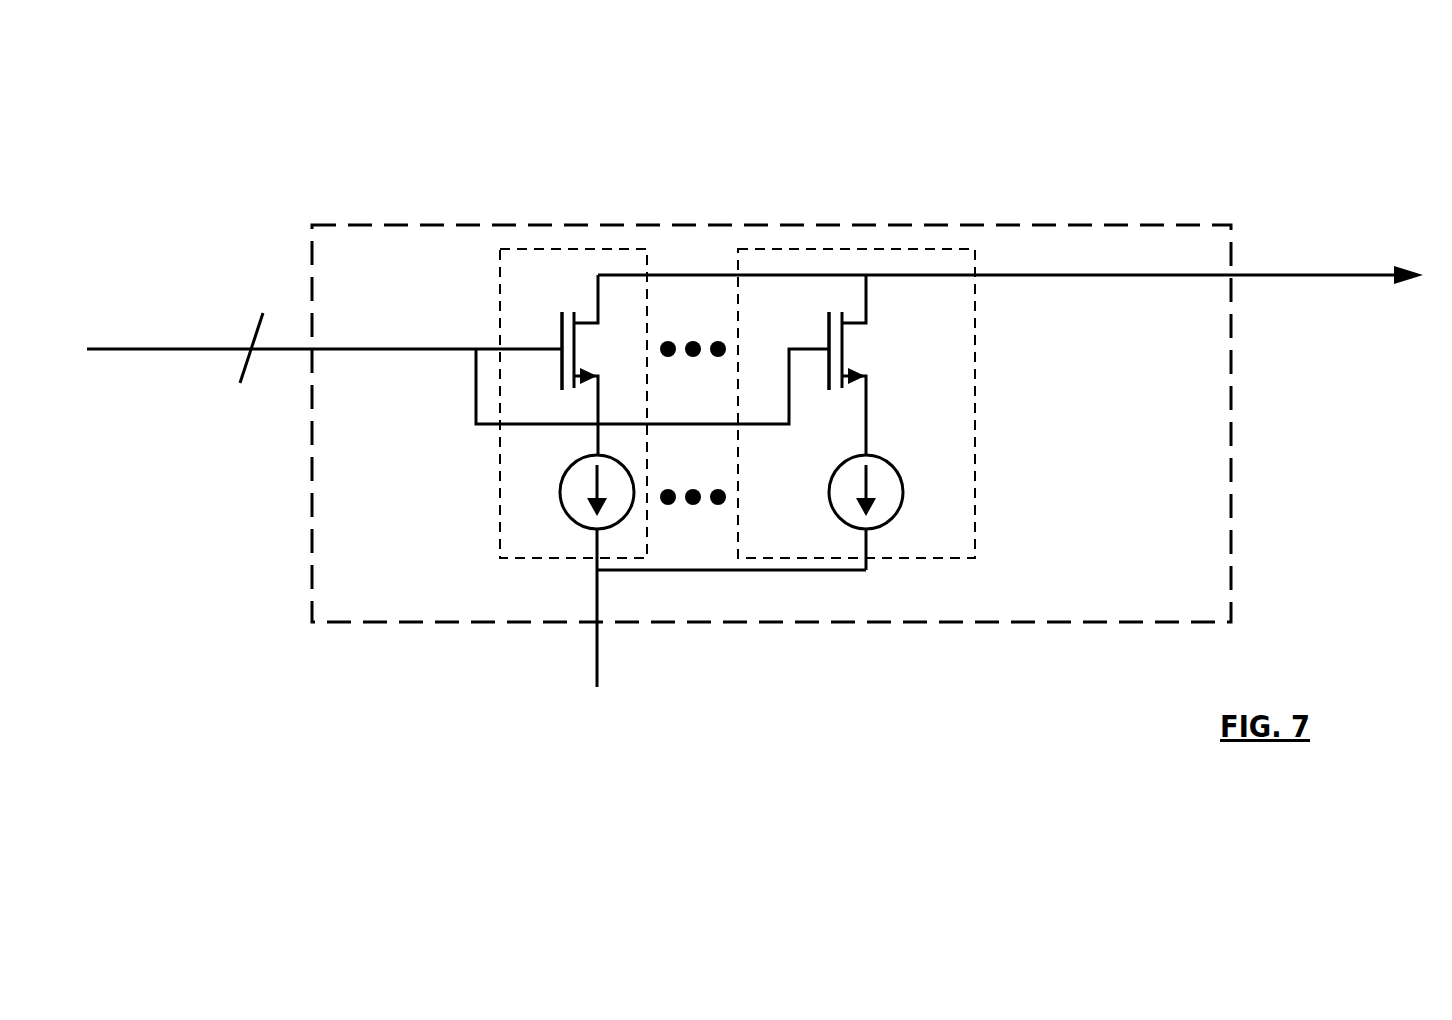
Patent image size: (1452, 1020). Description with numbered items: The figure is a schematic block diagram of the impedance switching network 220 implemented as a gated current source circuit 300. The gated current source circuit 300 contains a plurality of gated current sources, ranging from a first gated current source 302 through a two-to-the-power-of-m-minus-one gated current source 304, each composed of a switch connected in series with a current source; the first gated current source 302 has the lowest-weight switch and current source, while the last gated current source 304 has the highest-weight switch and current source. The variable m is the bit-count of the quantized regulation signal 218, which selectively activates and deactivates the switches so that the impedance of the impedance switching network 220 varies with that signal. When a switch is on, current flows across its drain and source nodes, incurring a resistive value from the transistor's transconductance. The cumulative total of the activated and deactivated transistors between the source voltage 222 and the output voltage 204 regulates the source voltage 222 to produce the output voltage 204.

The output voltage 204 is at (1010, 235).
The quantized regulation signal 218 is at (324, 304).
The impedance switching network 220 is at (755, 435).
The source voltage 222 is at (604, 667).
The gated current source circuit 300 is at (771, 423).
The first gated current source 302 is at (547, 249).
The 2^(m-1) gated current source 304 is at (823, 249).